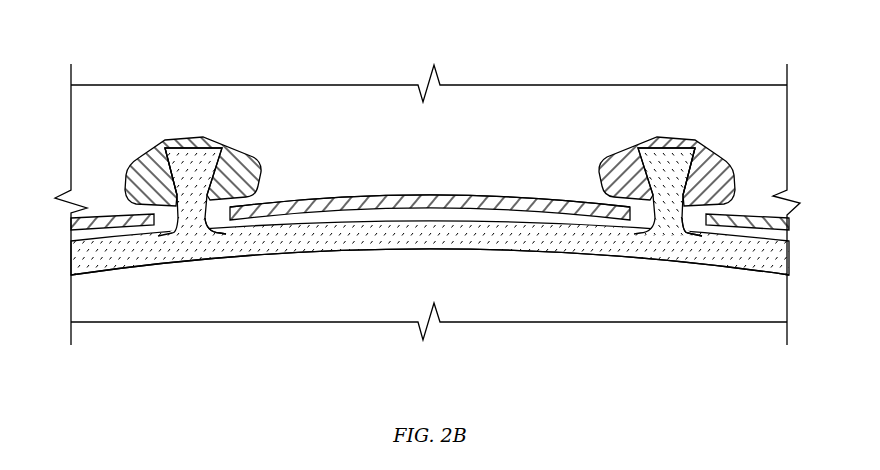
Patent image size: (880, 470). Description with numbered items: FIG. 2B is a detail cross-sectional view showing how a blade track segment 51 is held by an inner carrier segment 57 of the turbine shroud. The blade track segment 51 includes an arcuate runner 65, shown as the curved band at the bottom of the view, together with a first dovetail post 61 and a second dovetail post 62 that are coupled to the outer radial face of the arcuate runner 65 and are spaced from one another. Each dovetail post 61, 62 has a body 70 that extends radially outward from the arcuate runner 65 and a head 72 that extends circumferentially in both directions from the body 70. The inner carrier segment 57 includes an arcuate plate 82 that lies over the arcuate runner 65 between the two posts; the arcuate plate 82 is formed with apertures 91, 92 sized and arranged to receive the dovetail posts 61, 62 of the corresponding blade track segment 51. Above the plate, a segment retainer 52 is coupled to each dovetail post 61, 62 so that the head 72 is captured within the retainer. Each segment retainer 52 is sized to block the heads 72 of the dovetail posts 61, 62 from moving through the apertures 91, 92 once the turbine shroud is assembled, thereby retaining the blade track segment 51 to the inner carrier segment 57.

The blade track segment 51 is at (480, 252).
The segment retainer 52 is at (229, 145).
The inner carrier segment 57 is at (394, 204).
The first dovetail post 61 is at (198, 174).
The second dovetail post 62 is at (673, 174).
The arcuate runner 65 is at (385, 234).
The body 70 is at (191, 217).
The head 72 is at (191, 174).
The arcuate plate 82 is at (351, 204).
The aperture 91 is at (215, 231).
The aperture 92 is at (683, 231).